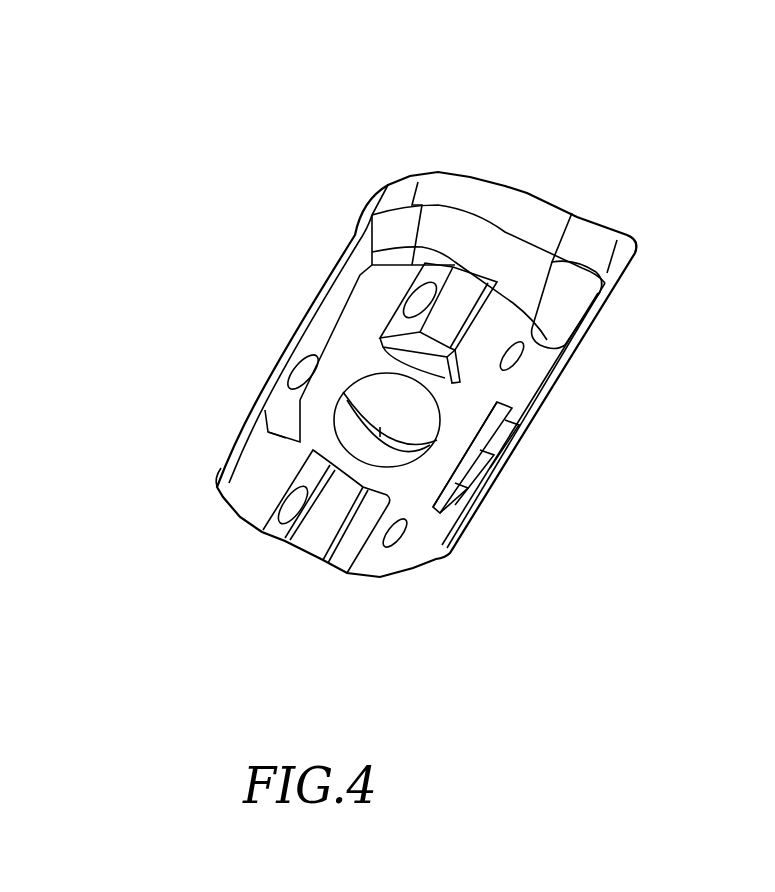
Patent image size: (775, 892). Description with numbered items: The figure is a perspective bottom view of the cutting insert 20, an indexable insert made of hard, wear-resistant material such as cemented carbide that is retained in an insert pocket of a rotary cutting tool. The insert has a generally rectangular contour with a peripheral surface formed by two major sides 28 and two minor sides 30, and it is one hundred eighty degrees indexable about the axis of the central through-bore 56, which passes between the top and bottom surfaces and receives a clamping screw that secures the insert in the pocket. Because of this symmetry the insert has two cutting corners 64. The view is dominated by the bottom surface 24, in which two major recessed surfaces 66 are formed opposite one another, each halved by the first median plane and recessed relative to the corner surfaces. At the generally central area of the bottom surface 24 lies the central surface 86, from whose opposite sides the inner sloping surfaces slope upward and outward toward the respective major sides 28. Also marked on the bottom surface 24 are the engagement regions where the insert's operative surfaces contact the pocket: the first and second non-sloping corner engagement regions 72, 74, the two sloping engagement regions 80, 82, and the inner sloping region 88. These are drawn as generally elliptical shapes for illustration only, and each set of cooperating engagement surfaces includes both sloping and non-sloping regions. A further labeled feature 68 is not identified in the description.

The cutting insert 20 is at (190, 170).
The bottom surface 24 is at (217, 490).
The major sides 28 is at (532, 400).
The minor sides 30 is at (520, 213).
The central through-bore 56 is at (377, 393).
The cutting corners 64 is at (182, 474).
The major recessed surfaces 66 is at (470, 282).
The rib 68 is at (510, 467).
The first non-sloping corner engagement region 72 is at (398, 540).
The second non-sloping corner engagement region 74 is at (515, 355).
The sloping engagement region 80 is at (297, 500).
The sloping engagement region 82 is at (422, 272).
The central surface 86 is at (357, 347).
The inner sloping region 88 is at (300, 373).